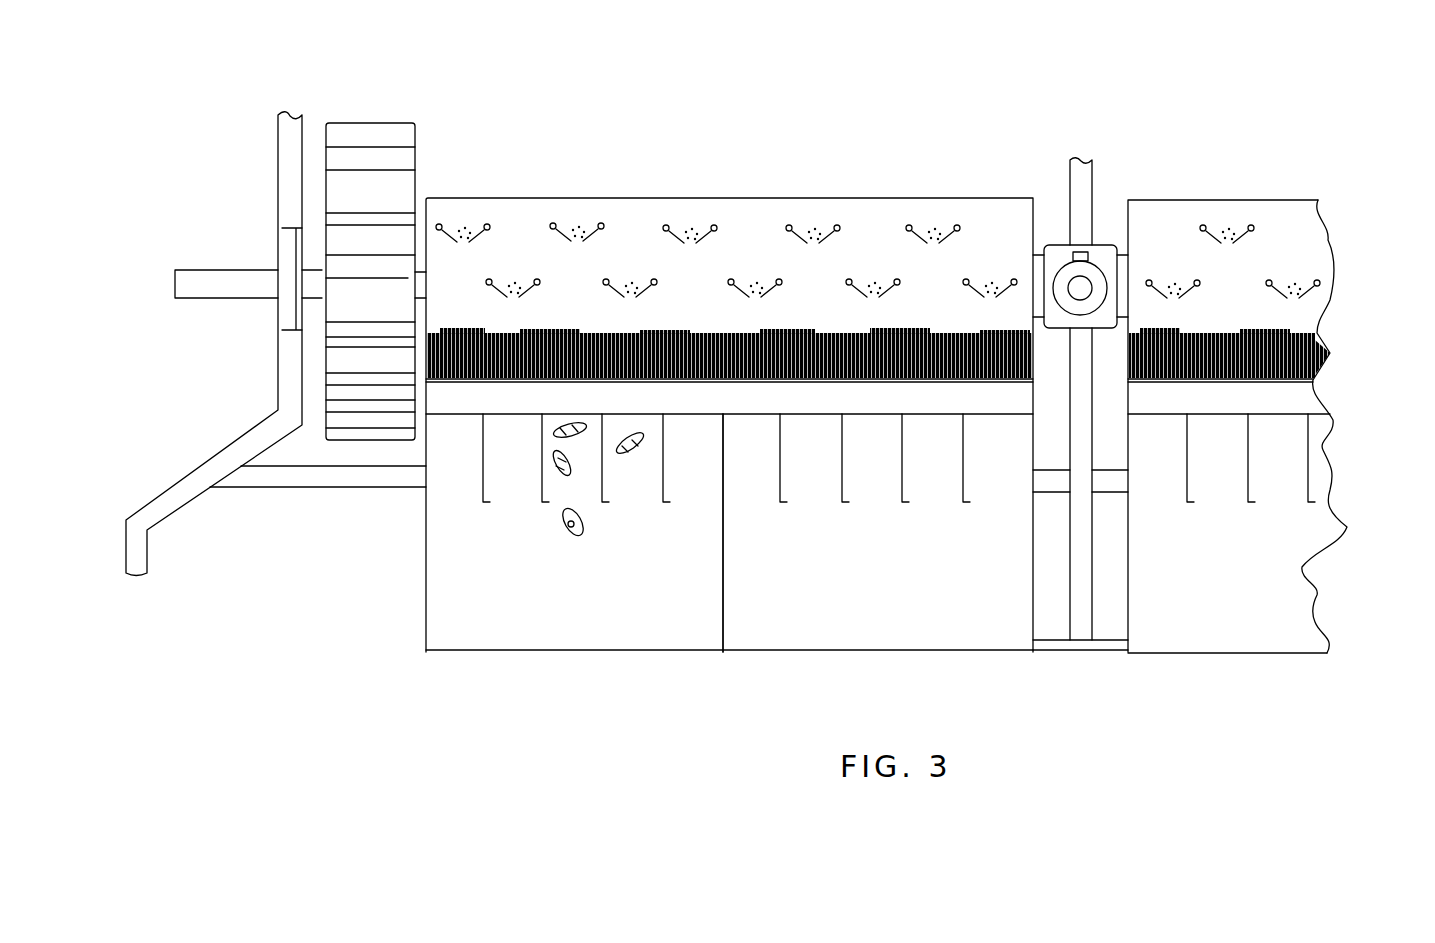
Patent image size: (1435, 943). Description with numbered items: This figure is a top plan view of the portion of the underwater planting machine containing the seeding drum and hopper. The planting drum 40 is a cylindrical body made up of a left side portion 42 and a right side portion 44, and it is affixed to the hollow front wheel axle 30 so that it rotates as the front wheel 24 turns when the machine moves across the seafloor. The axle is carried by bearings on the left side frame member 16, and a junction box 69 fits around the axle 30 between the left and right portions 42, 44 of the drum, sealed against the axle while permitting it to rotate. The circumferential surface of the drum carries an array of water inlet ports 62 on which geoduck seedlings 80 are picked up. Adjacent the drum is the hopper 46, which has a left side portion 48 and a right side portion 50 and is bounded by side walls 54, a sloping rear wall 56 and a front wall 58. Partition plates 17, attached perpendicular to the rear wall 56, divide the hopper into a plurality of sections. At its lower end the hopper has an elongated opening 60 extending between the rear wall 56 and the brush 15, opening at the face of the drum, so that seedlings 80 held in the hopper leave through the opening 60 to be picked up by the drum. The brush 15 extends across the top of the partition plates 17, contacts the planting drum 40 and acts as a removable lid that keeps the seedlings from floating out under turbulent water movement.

The brush 15 is at (665, 332).
The left side frame member 16 is at (218, 462).
The partition plates 17 is at (902, 470).
The front wheel 24 is at (388, 132).
The front wheel axle 30 is at (203, 282).
The planting drum 40 is at (729, 372).
The left side portion 42 is at (869, 212).
The right side portion 44 is at (1265, 212).
The hopper 46 is at (663, 692).
The left side portion 48 is at (497, 625).
The right side portion 50 is at (1287, 604).
The side walls 54 is at (425, 575).
The sloping rear wall 56 is at (822, 628).
The front wall 58 is at (810, 426).
The elongated opening 60 is at (683, 381).
The water inlet ports 62 is at (697, 220).
The junction box 69 is at (1100, 253).
The geoduck seedlings 80 is at (628, 465).